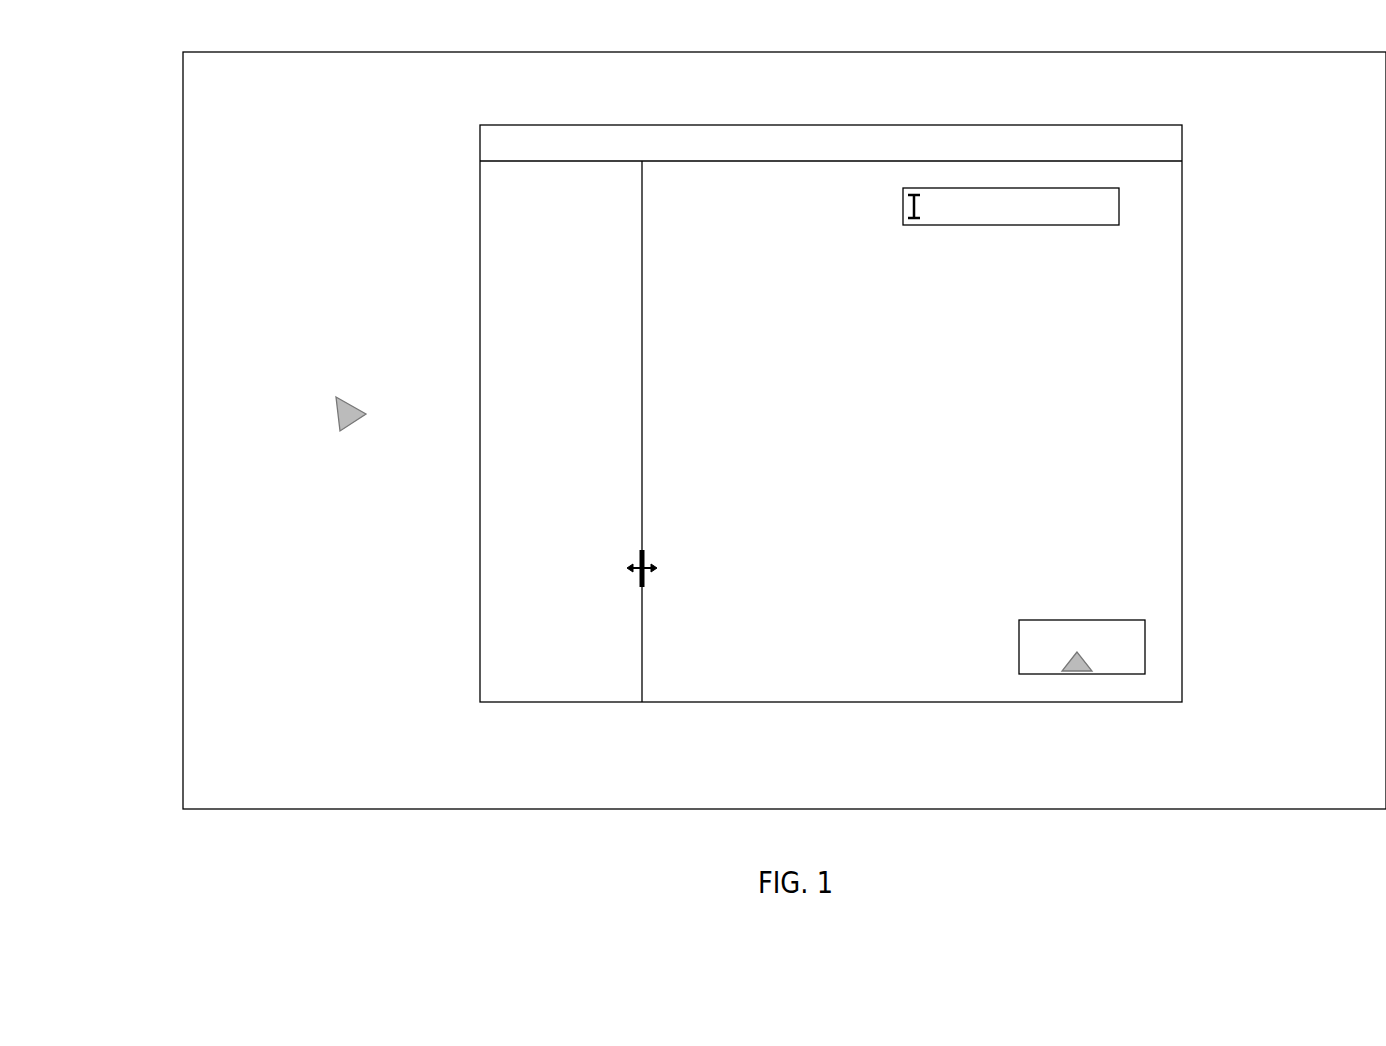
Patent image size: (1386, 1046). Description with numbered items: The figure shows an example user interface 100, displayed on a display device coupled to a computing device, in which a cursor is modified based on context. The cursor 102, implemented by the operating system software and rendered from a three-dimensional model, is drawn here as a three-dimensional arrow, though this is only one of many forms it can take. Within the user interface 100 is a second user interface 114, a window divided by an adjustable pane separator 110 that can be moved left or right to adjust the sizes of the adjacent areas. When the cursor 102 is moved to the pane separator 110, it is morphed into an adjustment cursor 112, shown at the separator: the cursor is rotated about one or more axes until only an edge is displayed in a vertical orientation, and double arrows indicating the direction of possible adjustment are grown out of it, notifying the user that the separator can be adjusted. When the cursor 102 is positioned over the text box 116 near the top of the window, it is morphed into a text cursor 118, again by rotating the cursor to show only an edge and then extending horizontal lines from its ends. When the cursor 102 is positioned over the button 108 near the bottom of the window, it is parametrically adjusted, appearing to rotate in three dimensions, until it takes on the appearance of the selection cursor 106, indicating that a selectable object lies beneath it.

The user interface 100 is at (182, 88).
The cursor 102 is at (336, 400).
The selection cursor 106 is at (1077, 665).
The button 108 is at (1063, 620).
The adjustable pane separator 110 is at (642, 497).
The adjustment cursor 112 is at (658, 563).
The user interface 114 is at (480, 269).
The text box 116 is at (1020, 225).
The text cursor 118 is at (907, 202).